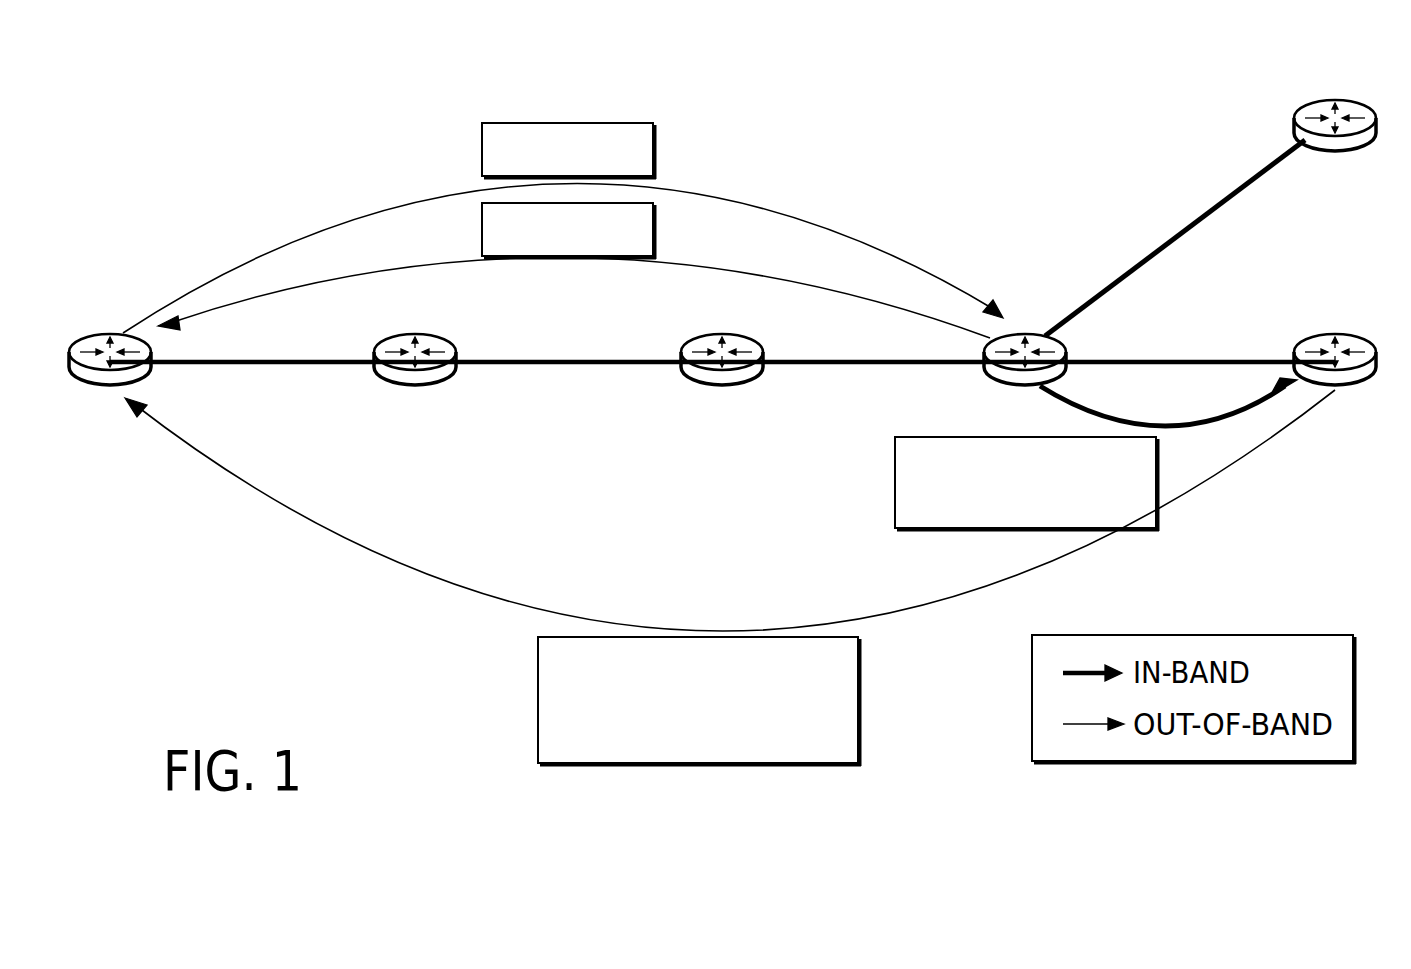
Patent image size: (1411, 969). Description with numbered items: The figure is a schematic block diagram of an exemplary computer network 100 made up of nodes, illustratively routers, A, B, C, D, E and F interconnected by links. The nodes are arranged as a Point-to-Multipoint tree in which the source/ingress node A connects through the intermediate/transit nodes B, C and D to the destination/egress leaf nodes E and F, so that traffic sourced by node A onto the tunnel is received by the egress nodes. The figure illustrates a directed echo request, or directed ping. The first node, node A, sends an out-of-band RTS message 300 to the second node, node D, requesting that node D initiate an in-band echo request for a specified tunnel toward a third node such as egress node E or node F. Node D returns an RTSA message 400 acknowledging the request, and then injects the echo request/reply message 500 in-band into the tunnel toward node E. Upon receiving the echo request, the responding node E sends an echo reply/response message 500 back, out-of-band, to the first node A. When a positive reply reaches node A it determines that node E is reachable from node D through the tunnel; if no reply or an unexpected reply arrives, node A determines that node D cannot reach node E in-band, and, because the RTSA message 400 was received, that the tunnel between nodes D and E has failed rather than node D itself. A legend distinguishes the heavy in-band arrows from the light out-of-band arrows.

The computer network 100 is at (262, 110).
The RTS message 300 is at (630, 168).
The RTSA message 400 is at (640, 246).
The echo request/reply message 500 is at (1052, 516).
The node A is at (90, 387).
The node B is at (430, 386).
The node C is at (737, 387).
The node D is at (990, 385).
The node E is at (1350, 387).
The node F is at (1347, 100).